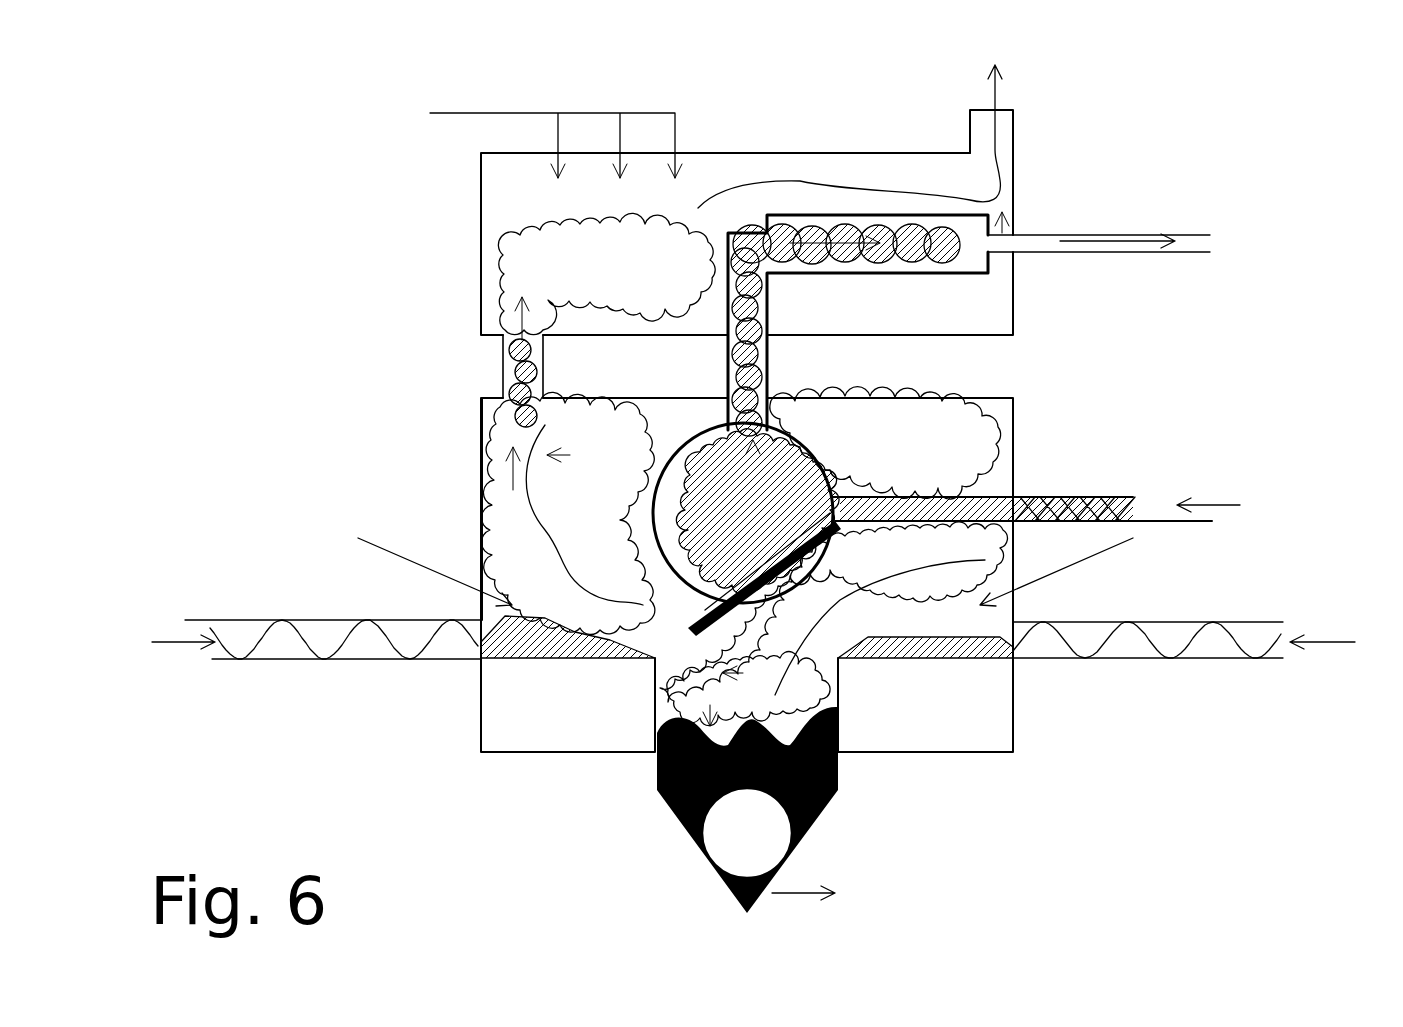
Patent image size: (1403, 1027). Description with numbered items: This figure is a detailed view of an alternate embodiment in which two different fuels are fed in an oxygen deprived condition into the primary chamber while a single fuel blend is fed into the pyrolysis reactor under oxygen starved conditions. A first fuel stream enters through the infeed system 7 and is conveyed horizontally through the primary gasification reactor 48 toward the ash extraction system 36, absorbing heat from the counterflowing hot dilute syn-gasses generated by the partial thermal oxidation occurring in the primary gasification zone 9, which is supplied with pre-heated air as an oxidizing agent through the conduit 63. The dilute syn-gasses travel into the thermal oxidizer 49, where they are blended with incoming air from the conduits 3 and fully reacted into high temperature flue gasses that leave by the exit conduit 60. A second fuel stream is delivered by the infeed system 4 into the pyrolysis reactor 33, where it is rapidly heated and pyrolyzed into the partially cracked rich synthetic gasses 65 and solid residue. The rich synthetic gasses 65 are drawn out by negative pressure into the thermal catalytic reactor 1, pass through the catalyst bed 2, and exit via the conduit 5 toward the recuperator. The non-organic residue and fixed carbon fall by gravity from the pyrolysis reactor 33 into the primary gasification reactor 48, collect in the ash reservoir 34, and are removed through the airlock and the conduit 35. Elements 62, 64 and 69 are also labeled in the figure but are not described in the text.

The thermal catalytic reactor 1 is at (883, 213).
The catalyst bed 2 is at (680, 324).
The conduits 3 is at (536, 129).
The infeed system 4 is at (1240, 505).
The conduit 5 is at (1090, 235).
The infeed system 7 is at (753, 641).
The primary gasification zone 9 is at (917, 440).
The pyrolysis reactor 33 is at (975, 497).
The ash reservoir 34 is at (770, 850).
The conduit 35 is at (839, 893).
The ash extraction system 36 is at (683, 648).
The primary gasification reactor 48 is at (482, 448).
The thermal oxidizer 49 is at (733, 153).
The exit conduit 60 is at (857, 124).
The lower left chamber flow 62 is at (543, 433).
The conduit 63 is at (443, 575).
The upper chamber flow 64 is at (530, 267).
The rich synthetic gasses 65 is at (782, 447).
The nozzle body 69 is at (840, 788).